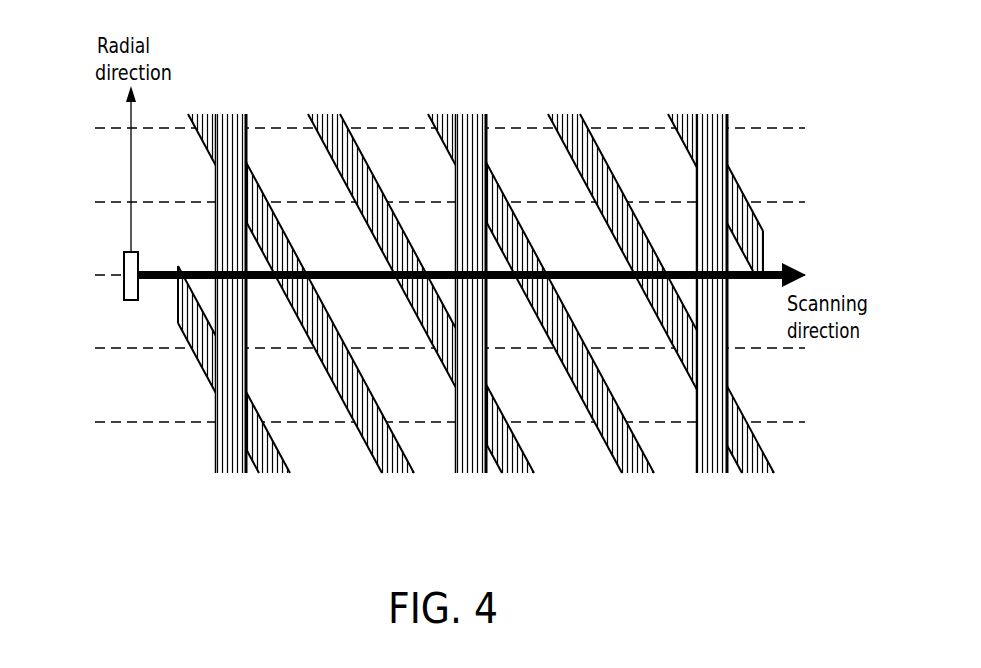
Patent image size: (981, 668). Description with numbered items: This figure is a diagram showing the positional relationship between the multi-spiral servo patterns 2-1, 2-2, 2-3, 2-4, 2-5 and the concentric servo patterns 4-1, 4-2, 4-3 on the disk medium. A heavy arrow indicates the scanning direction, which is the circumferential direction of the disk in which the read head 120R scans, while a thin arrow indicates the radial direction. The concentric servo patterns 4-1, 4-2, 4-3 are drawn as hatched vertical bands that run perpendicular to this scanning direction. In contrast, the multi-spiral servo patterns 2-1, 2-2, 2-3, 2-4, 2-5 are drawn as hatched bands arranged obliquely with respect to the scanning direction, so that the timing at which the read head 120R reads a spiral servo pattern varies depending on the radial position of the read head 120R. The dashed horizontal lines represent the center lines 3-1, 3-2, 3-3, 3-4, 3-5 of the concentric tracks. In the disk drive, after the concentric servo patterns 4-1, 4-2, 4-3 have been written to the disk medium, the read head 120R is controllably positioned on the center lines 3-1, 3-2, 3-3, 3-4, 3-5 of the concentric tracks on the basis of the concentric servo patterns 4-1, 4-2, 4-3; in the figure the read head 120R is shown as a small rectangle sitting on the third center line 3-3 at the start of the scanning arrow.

The multi-spiral servo pattern 2-1 is at (200, 114).
The multi-spiral servo pattern 2-2 is at (320, 114).
The multi-spiral servo pattern 2-3 is at (440, 114).
The multi-spiral servo pattern 2-4 is at (560, 114).
The multi-spiral servo pattern 2-5 is at (680, 114).
The center line of concentric track 3-1 is at (95, 422).
The center line of concentric track 3-2 is at (95, 348).
The center line of concentric track 3-3 is at (96, 275).
The center line of concentric track 3-4 is at (97, 202).
The center line of concentric track 3-5 is at (96, 128).
The concentric servo pattern 4-1 is at (232, 475).
The concentric servo pattern 4-2 is at (473, 475).
The concentric servo pattern 4-3 is at (713, 475).
The read head 120R is at (125, 283).